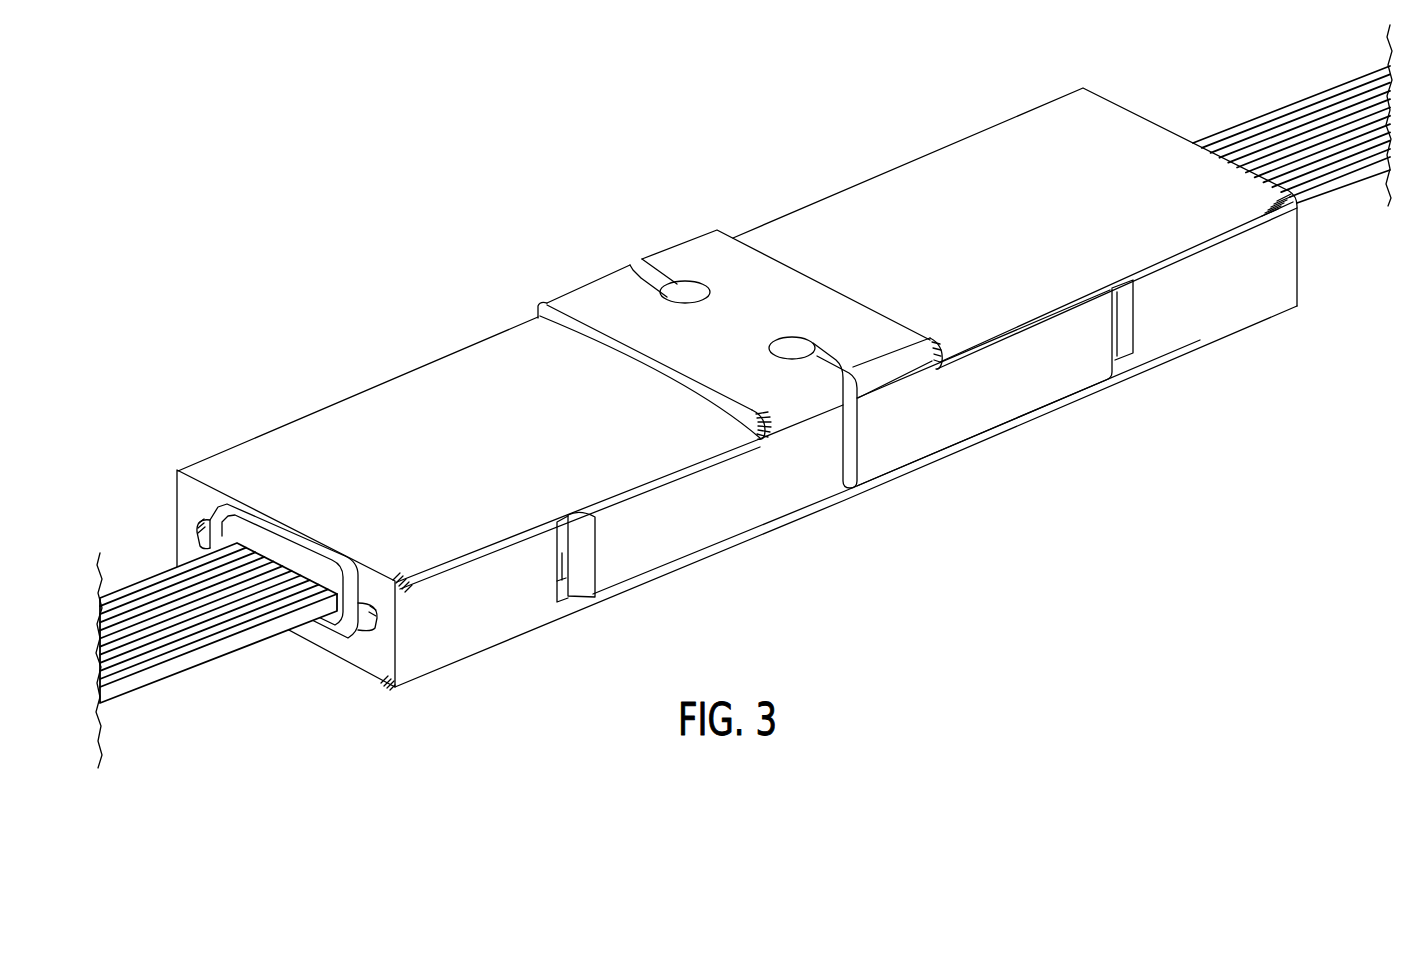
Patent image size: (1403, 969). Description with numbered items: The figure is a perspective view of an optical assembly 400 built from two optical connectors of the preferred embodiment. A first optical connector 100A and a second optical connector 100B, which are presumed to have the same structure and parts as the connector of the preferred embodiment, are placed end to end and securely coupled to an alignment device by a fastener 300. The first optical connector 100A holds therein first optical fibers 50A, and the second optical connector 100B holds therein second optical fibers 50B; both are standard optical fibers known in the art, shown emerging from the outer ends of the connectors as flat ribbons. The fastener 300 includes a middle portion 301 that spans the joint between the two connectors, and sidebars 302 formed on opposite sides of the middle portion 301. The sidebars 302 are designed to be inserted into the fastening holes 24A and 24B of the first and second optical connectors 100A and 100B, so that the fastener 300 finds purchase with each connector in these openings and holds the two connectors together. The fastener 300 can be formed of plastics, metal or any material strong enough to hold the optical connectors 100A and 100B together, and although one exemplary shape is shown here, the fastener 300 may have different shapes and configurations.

The optical assembly 400 is at (296, 226).
The first optical connector 100A is at (1015, 132).
The second optical connector 100B is at (293, 432).
The fastener 300 is at (570, 268).
The middle portion 301 is at (737, 315).
The sidebars 302 is at (1052, 383).
The fastening hole 24A is at (1123, 322).
The fastening hole 24B is at (562, 553).
The first optical fibers 50A is at (1270, 82).
The second optical fibers 50B is at (203, 690).